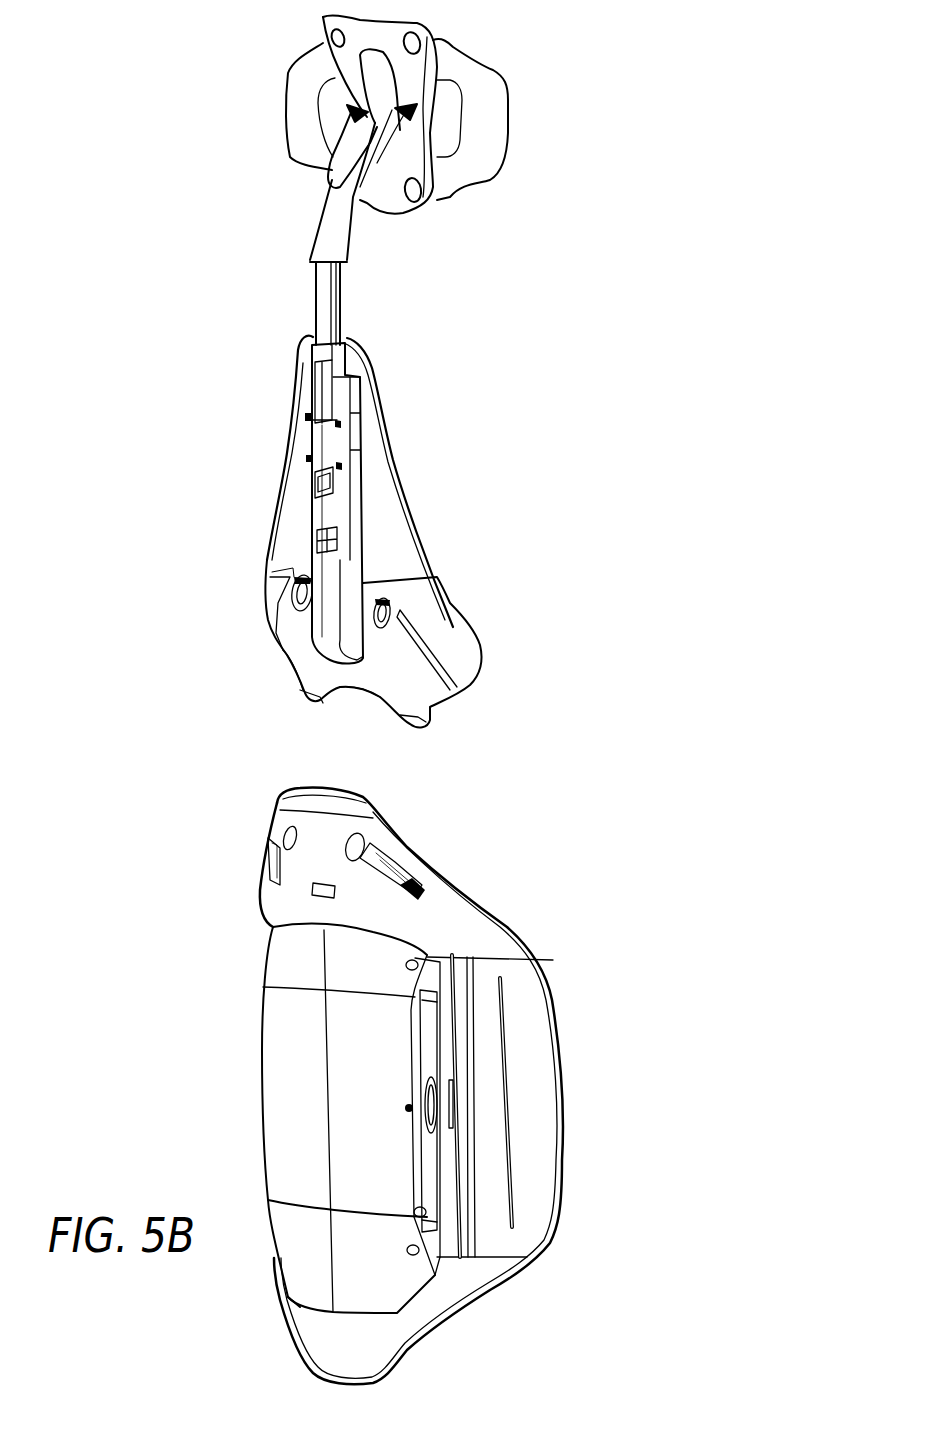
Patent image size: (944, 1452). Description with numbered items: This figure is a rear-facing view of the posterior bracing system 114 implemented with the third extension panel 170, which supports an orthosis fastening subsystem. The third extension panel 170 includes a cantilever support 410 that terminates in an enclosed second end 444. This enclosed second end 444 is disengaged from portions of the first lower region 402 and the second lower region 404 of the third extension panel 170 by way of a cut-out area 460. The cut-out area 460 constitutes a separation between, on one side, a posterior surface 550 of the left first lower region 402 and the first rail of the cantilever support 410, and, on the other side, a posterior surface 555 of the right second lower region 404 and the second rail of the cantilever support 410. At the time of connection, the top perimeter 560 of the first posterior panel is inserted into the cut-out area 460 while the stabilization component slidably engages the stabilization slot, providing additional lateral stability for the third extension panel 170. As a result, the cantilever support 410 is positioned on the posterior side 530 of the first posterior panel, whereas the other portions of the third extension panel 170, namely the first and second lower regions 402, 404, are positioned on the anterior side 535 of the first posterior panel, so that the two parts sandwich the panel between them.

The posterior bracing system 114 is at (602, 610).
The third extension panel 170 is at (396, 408).
The cantilever support 410 is at (357, 487).
The enclosed second end 444 is at (350, 633).
The cut-out area 460 is at (363, 657).
The first lower region 402 is at (296, 644).
The posterior surface 550 is at (312, 663).
The second lower region 404 is at (392, 661).
The posterior surface 555 is at (372, 672).
The top perimeter 560 is at (317, 787).
The anterior side 535 is at (499, 872).
The posterior side 530 is at (309, 906).